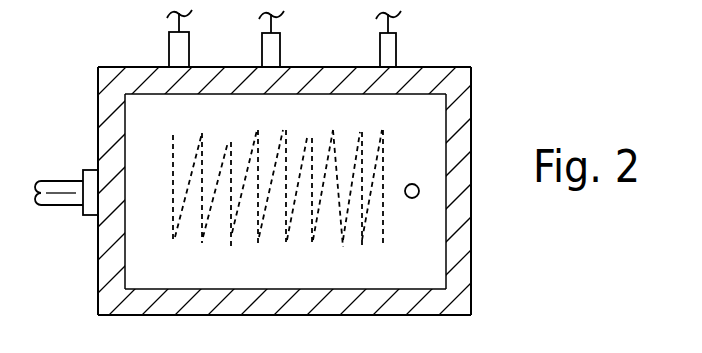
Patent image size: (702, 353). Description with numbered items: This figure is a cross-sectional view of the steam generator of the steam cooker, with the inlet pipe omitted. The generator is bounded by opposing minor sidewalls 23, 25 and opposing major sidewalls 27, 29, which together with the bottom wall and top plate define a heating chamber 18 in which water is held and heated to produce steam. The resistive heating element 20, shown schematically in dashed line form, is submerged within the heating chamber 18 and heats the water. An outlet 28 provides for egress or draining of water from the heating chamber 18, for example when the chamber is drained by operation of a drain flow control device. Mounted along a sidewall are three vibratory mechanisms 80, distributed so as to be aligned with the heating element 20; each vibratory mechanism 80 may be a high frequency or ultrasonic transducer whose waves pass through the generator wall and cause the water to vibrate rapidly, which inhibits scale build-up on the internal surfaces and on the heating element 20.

The heating chamber 18 is at (218, 112).
The resistive heating element 20 is at (383, 170).
The minor sidewall 23 is at (98, 140).
The minor sidewall 25 is at (471, 220).
The major sidewall 27 is at (372, 67).
The outlet 28 is at (418, 184).
The major sidewall 29 is at (318, 315).
The vibratory mechanism 80 is at (168, 42).